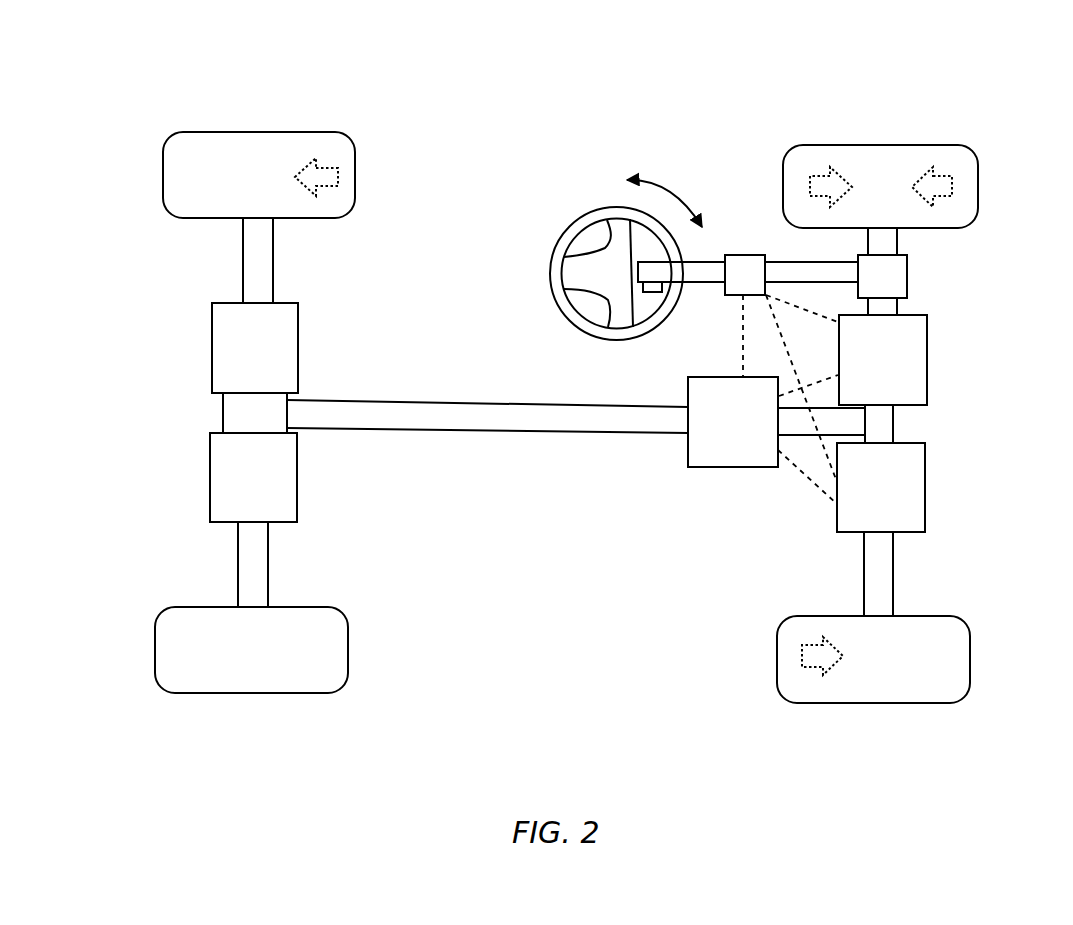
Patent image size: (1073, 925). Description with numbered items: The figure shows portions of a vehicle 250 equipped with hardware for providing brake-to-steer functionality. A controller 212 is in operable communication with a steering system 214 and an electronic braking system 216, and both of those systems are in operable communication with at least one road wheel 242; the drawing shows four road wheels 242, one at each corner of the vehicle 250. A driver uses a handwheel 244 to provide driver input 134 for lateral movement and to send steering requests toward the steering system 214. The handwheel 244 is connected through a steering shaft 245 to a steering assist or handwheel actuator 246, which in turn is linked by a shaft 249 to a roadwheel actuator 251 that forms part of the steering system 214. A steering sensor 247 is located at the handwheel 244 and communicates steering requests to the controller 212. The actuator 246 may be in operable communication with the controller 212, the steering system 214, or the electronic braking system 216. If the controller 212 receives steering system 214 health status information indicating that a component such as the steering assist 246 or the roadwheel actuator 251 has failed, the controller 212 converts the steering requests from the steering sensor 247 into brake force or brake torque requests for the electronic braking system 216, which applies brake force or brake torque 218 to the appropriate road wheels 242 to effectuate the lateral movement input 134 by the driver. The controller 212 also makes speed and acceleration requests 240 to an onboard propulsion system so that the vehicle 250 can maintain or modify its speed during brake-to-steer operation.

The vehicle 250 is at (185, 72).
The road wheel 242 is at (347, 180).
The brake force or brake torque 218 is at (318, 176).
The speed and acceleration requests 240 is at (825, 186).
The handwheel 244 is at (578, 222).
The driver input 134 is at (646, 180).
The steering shaft 245 is at (705, 283).
The steering sensor 247 is at (652, 292).
The steering assist or handwheel actuator 246 is at (750, 265).
The steering linkage shaft 249 is at (822, 262).
The roadwheel actuator 251 is at (887, 280).
The controller 212 is at (733, 422).
The steering system 214 is at (883, 360).
The electronic braking system 216 is at (881, 487).